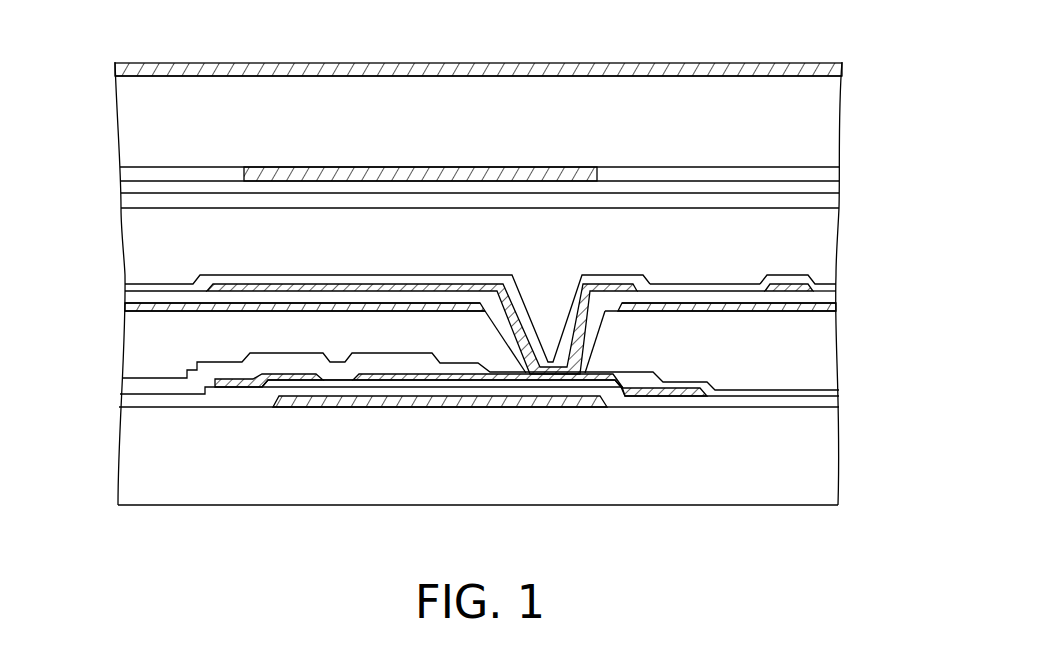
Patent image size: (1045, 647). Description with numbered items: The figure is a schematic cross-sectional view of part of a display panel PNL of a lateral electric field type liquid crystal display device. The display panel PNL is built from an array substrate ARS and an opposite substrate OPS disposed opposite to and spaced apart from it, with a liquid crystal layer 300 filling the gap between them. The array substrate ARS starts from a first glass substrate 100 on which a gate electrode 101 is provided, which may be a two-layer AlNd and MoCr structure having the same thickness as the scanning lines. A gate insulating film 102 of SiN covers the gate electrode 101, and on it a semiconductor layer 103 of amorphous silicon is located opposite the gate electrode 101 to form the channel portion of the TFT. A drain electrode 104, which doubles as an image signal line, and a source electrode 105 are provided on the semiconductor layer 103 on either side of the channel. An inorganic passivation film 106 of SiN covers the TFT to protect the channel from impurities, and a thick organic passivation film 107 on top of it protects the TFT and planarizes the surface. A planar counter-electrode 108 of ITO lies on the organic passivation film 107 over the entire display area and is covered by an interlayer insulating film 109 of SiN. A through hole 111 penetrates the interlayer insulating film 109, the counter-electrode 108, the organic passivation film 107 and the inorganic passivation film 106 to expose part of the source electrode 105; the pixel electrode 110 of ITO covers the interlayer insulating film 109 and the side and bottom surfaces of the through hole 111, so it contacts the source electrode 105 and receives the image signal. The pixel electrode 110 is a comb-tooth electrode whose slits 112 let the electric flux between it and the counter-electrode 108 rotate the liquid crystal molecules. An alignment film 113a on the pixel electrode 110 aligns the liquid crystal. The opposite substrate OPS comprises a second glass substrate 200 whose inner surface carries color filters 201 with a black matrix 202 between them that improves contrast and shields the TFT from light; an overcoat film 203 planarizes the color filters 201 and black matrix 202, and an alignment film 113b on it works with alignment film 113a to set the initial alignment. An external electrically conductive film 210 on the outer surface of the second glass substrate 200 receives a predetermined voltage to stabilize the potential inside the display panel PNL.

The first glass substrate 100 is at (198, 465).
The gate electrode 101 is at (335, 406).
The gate insulating film 102 is at (117, 400).
The semiconductor layer 103 is at (400, 380).
The drain electrode 104 is at (290, 380).
The source electrode 105 is at (463, 375).
The inorganic passivation film 106 is at (123, 387).
The organic passivation film 107 is at (127, 353).
The counter-electrode 108 is at (128, 305).
The interlayer insulating film 109 is at (130, 296).
The pixel electrode 110 is at (430, 284).
The through hole 111 is at (550, 342).
The slits 112 is at (697, 288).
The alignment film 113a is at (827, 290).
The alignment film 113b is at (823, 203).
The second glass substrate 200 is at (815, 131).
The color filters 201 is at (815, 175).
The black matrix 202 is at (557, 167).
The overcoat film 203 is at (818, 191).
The external electrically conductive film 210 is at (733, 70).
The liquid crystal layer 300 is at (820, 263).
The display panel PNL is at (503, 43).
The opposite substrate OPS is at (100, 135).
The array substrate ARS is at (857, 370).